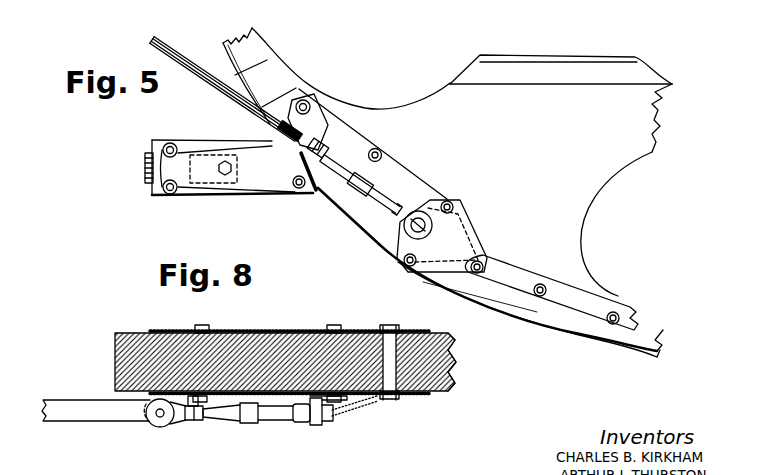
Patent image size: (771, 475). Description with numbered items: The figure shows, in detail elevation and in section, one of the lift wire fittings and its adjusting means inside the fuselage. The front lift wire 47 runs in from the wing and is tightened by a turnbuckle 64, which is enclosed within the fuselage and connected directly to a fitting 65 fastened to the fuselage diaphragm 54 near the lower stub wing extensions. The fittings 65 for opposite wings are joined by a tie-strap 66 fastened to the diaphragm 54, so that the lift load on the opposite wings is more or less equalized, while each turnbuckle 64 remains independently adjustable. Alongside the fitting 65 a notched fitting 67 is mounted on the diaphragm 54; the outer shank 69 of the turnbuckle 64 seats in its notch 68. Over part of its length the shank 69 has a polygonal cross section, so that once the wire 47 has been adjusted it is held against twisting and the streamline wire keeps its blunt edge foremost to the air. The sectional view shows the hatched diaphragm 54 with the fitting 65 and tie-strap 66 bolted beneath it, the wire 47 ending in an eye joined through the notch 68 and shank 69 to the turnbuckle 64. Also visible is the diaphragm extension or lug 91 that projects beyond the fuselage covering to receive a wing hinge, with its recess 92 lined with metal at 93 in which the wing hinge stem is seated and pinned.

In FIG. 5, the front lift wire 47 is at (172, 49).
In FIG. 8, the front lift wire 47 is at (122, 416).
In FIG. 5, the fuselage diaphragm 54 is at (581, 206).
In FIG. 8, the fuselage diaphragm 54 is at (463, 368).
In FIG. 5, the turnbuckle 64 is at (380, 190).
In FIG. 8, the turnbuckle 64 is at (274, 421).
In FIG. 5, the fitting 65 is at (444, 234).
In FIG. 8, the fitting 65 is at (357, 408).
In FIG. 5, the tie-strap 66 is at (595, 309).
In FIG. 8, the tie-strap 66 is at (421, 397).
In FIG. 5, the notched fitting 67 is at (308, 148).
In FIG. 8, the notched fitting 67 is at (142, 344).
In FIG. 5, the notch 68 is at (330, 144).
In FIG. 8, the notch 68 is at (193, 421).
In FIG. 5, the outer shank of turnbuckle 69 is at (317, 192).
In FIG. 8, the outer shank of turnbuckle 69 is at (204, 418).
In FIG. 5, the extension or lug 91 is at (200, 141).
In FIG. 5, the recess 92 is at (230, 152).
In FIG. 5, the metal lining 93 is at (145, 171).